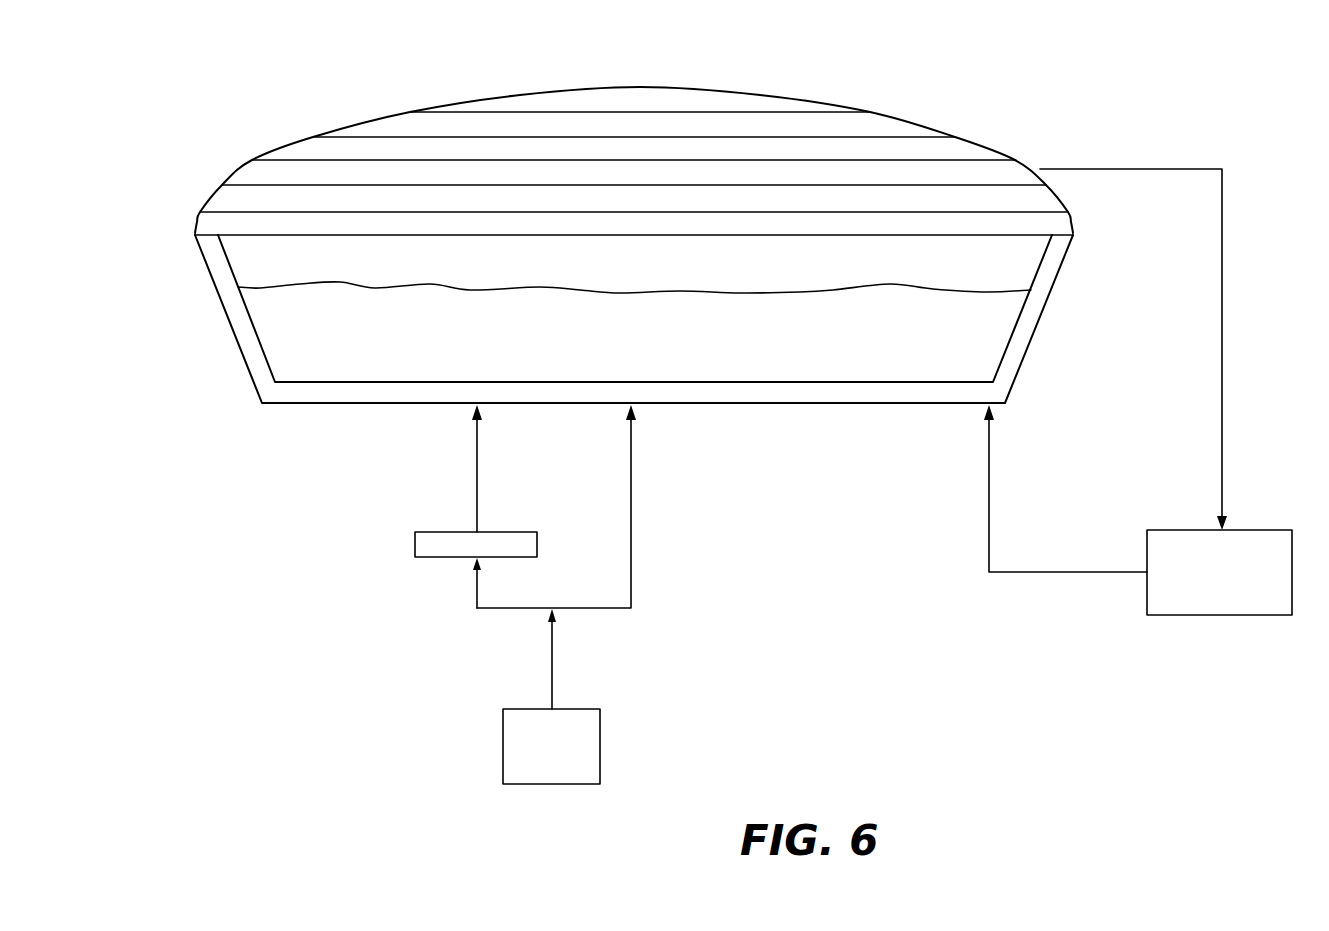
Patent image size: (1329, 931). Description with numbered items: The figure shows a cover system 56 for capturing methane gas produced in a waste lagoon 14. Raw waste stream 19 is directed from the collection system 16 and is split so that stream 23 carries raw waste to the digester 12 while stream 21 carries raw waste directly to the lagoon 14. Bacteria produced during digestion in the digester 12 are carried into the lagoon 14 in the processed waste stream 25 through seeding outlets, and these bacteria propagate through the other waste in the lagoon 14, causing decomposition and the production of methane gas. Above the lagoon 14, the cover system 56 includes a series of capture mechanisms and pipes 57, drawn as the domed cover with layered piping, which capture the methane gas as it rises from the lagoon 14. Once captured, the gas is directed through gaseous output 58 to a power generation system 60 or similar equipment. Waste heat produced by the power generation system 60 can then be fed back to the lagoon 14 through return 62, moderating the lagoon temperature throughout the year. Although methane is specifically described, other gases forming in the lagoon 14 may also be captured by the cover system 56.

The cover system 56 is at (968, 56).
The capture mechanisms and pipes 57 is at (430, 115).
The gaseous output 58 is at (1163, 170).
The lagoon 14 is at (872, 365).
The digester 12 is at (428, 537).
The processed waste stream 25 is at (477, 478).
The stream 21 is at (631, 477).
The stream 23 is at (477, 590).
The raw waste stream 19 is at (552, 673).
The collection system 16 is at (597, 728).
The return 62 is at (989, 476).
The power generation system 60 is at (1163, 537).